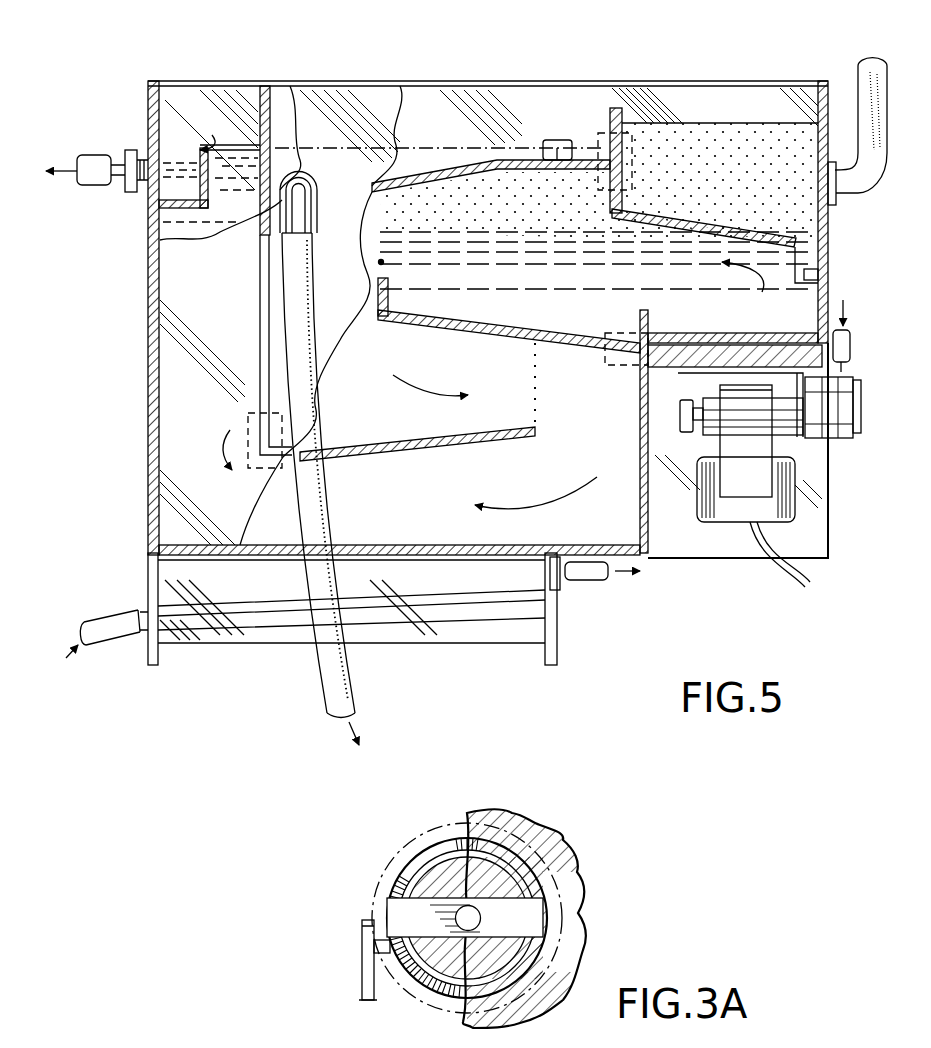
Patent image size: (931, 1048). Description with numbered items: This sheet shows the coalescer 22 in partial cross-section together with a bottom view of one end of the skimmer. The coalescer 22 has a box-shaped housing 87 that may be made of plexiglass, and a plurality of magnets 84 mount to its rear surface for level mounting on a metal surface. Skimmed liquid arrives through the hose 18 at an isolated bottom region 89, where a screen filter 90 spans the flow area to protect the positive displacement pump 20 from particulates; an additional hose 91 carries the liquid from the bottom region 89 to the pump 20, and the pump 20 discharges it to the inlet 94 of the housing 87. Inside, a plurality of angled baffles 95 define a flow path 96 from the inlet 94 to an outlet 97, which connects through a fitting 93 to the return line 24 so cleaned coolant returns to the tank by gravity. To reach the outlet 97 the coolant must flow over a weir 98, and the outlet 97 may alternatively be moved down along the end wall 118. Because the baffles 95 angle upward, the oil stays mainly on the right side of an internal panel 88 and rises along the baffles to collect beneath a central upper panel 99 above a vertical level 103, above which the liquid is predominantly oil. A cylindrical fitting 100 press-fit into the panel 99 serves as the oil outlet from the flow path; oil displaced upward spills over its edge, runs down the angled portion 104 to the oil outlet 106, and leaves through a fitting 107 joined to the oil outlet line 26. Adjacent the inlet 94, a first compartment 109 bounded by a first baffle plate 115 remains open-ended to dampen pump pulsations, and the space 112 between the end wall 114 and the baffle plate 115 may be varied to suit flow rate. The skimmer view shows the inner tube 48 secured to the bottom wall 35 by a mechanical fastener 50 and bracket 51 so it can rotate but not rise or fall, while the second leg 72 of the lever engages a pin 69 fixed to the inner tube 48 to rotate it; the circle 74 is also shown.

In FIG. 5, the coalescer 22 is at (549, 57).
In FIG. 5, the housing 87 is at (146, 410).
In FIG. 5, the outlet 97 is at (178, 150).
In FIG. 5, the weir 98 is at (212, 150).
In FIG. 5, the end wall 118 is at (150, 236).
In FIG. 5, the return line 24 is at (86, 158).
In FIG. 5, the fitting 93 is at (128, 194).
In FIG. 5, the internal panel 88 is at (262, 354).
In FIG. 5, the oil outlet line 26 is at (322, 491).
In FIG. 5, the oil outlet 106 is at (300, 178).
In FIG. 5, the fitting 107 is at (310, 212).
In FIG. 5, the angled portion 104 is at (428, 168).
In FIG. 5, the central upper panel 99 is at (498, 152).
In FIG. 5, the cylindrical fitting 100 is at (562, 130).
In FIG. 5, the vertical level 103 is at (515, 230).
In FIG. 5, the magnets 84 is at (600, 138).
In FIG. 5, the first compartment 109 is at (716, 132).
In FIG. 5, the first baffle plate 115 is at (688, 213).
In FIG. 5, the angled baffles 95 is at (653, 208).
In FIG. 5, the flow path 96 is at (231, 456).
In FIG. 5, the end wall 114 is at (828, 250).
In FIG. 5, the space 112 is at (826, 277).
In FIG. 5, the inlet 94 is at (855, 191).
In FIG. 5, the additional hose 91 is at (852, 350).
In FIG. 5, the positive displacement pump 20 is at (754, 460).
In FIG. 5, the bottom region 89 is at (175, 573).
In FIG. 5, the screen filter 90 is at (386, 633).
In FIG. 5, the hose 18 is at (101, 622).
In FIG. 3A, the bottom wall 35 is at (578, 892).
In FIG. 3A, the pitch circle 74 is at (449, 825).
In FIG. 3A, the inner tube 48 is at (419, 856).
In FIG. 3A, the bracket 51 is at (410, 900).
In FIG. 3A, the mechanical fastener 50 is at (461, 929).
In FIG. 3A, the second leg 72 is at (362, 976).
In FIG. 3A, the pin 69 is at (407, 989).